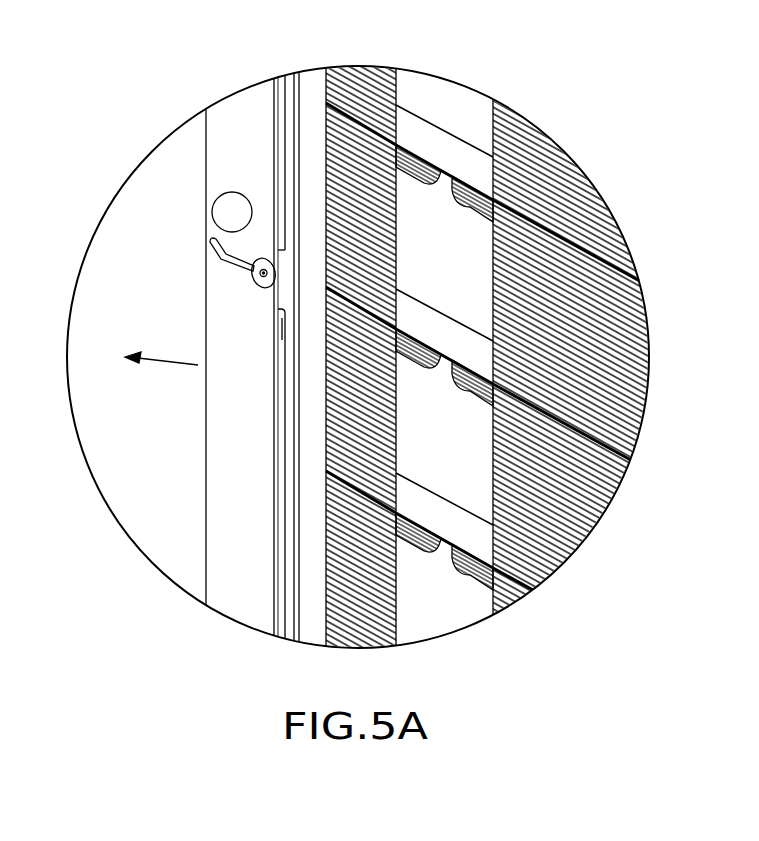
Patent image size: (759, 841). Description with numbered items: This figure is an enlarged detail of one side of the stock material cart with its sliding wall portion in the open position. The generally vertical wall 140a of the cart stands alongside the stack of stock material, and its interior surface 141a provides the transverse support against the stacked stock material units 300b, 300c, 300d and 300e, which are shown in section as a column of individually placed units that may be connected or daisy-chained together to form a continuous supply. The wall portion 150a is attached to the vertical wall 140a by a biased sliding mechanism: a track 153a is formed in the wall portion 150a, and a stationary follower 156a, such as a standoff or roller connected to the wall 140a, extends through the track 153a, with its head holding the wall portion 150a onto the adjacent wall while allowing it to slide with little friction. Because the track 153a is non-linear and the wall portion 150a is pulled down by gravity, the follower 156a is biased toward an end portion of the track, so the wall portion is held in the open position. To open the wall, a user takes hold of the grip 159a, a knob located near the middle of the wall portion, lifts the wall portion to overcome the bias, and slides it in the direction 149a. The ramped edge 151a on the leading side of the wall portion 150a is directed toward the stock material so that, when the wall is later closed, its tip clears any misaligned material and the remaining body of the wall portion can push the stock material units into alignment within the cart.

The interior surface 141a is at (313, 83).
The wall portion 150a is at (240, 122).
The grip 159a is at (227, 215).
The track 153a is at (222, 256).
The follower 156a is at (255, 274).
The direction of sliding 149a is at (161, 375).
The ramped edge 151a is at (282, 612).
The vertical wall 140a is at (288, 615).
The stock material unit 300b is at (535, 153).
The stock material unit 300c is at (620, 375).
The stock material unit 300d is at (543, 518).
The stock material unit 300e is at (503, 588).